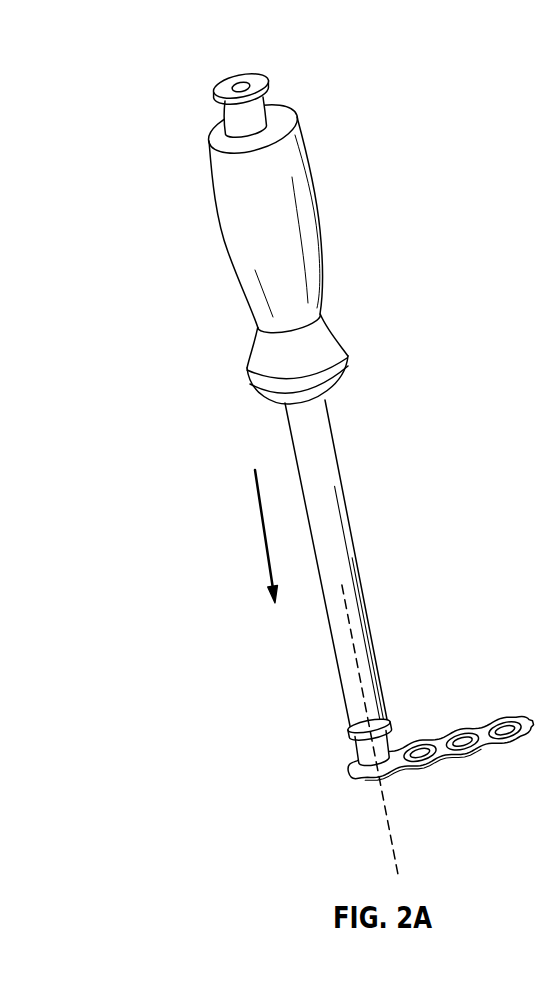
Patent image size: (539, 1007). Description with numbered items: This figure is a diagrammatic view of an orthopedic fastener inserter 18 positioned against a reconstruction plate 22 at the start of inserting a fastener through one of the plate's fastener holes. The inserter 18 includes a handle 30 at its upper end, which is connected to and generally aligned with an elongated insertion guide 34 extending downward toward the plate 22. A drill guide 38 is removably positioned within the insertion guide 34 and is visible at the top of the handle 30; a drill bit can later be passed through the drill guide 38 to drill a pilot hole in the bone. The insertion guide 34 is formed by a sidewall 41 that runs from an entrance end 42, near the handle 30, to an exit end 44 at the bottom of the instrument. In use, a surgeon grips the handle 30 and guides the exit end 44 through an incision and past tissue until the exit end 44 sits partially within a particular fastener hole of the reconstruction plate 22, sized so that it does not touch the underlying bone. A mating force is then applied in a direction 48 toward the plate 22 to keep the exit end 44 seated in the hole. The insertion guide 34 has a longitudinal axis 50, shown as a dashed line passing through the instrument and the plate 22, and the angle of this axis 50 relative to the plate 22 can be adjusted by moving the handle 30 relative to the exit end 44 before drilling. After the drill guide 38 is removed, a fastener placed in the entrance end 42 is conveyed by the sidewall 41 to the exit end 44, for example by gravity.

The orthopedic fastener inserter 18 is at (274, 210).
The reconstruction plate 22 is at (468, 755).
The handle 30 is at (228, 250).
The insertion guide 34 is at (352, 530).
The drill guide 38 is at (258, 81).
The sidewall 41 is at (323, 564).
The entrance end 42 is at (223, 137).
The exit end 44 is at (358, 760).
The direction 48 is at (263, 553).
The longitudinal axis 50 is at (388, 833).